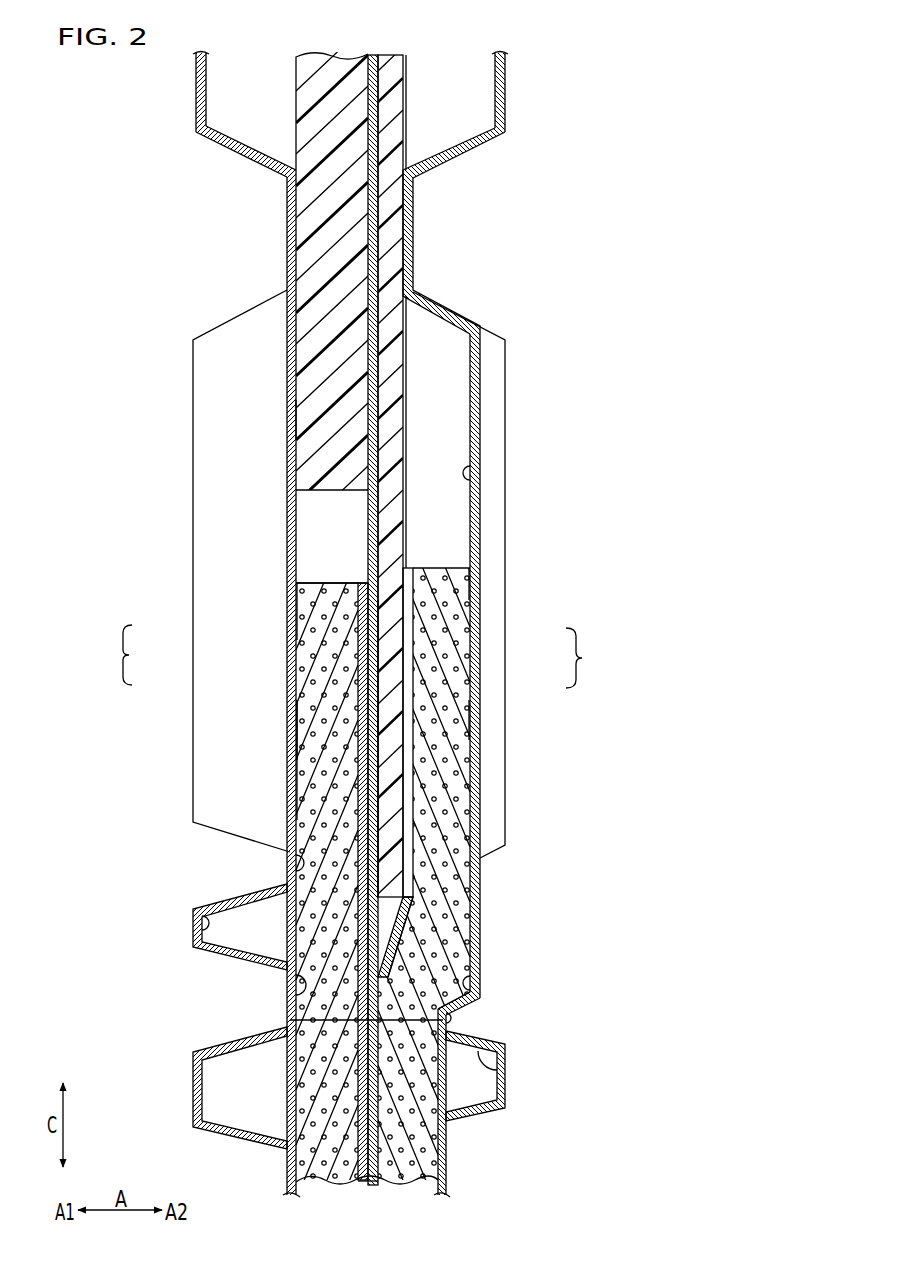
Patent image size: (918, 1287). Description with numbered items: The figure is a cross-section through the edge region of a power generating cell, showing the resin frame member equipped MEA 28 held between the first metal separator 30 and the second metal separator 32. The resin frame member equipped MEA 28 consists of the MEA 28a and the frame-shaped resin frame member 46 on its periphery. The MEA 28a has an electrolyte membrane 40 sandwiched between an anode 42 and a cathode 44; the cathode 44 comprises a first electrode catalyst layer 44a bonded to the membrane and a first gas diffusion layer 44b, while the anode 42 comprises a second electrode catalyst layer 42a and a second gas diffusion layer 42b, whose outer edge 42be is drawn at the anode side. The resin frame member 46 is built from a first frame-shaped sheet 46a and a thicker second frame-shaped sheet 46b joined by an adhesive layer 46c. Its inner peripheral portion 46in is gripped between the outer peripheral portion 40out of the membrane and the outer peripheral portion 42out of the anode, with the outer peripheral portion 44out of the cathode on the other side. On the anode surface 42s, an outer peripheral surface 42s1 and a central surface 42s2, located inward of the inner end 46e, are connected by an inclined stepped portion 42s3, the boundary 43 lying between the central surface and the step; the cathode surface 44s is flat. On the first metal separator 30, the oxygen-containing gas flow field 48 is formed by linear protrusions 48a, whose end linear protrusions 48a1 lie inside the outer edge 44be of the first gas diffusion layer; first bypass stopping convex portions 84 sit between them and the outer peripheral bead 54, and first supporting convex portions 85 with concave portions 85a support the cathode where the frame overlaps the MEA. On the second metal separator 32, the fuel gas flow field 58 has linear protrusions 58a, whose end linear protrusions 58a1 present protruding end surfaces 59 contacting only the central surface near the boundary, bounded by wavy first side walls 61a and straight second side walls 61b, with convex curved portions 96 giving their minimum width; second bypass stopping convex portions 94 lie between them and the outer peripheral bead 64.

The resin frame member equipped MEA 28 is at (326, 47).
The MEA 28a is at (363, 1192).
The first metal separator 30 is at (194, 97).
The second metal separator 32 is at (508, 81).
The electrolyte membrane 40 is at (350, 810).
The outer peripheral portion of the electrolyte membrane 40out is at (313, 728).
The anode 42 is at (491, 810).
The second electrode catalyst layer 42a is at (412, 650).
The second gas diffusion layer 42b is at (447, 691).
The upper end of second electrode 42be is at (447, 563).
The outer peripheral portion of the anode 42out is at (453, 586).
The surface of the anode 42s is at (471, 622).
The outer peripheral surface 42s1 is at (473, 718).
The central surface 42s2 is at (495, 1112).
The stepped portion 42s3 is at (458, 949).
The boundary 43 is at (449, 1006).
The cathode 44 is at (231, 893).
The first electrode catalyst layer 44a is at (340, 642).
The first gas diffusion layer 44b is at (332, 673).
The outer edge of the first gas diffusion layer 44be is at (318, 577).
The outer peripheral portion of the cathode 44out is at (296, 600).
The surface of the cathode 44s is at (292, 761).
The resin frame member 46 is at (403, 600).
The first frame-shaped sheet 46a is at (392, 388).
The second frame-shaped sheet 46b is at (313, 418).
The adhesive layer 46c is at (376, 428).
The inner end of the resin frame member 46e is at (388, 905).
The inner peripheral portion of the resin frame member 46in is at (392, 760).
The oxygen-containing gas flow field 48 is at (225, 1083).
The linear protrusions 48a is at (224, 996).
The end linear protrusions 48a1 is at (290, 1000).
The outer peripheral bead 54 is at (243, 146).
The fuel gas flow field 58 is at (487, 1085).
The linear protrusions 58a is at (559, 1033).
The end linear protrusions 58a1 is at (448, 1018).
The protruding end surfaces 59 is at (292, 1022).
The first side walls 61a is at (505, 1072).
The second side walls 61b is at (478, 978).
The outer peripheral bead 64 is at (448, 150).
The first bypass stopping convex portions 84 is at (298, 528).
The first supporting convex portions 85 is at (290, 861).
The concave portions 85a is at (212, 912).
The second bypass stopping convex portions 94 is at (478, 468).
The convex curved portions 96 is at (452, 1019).